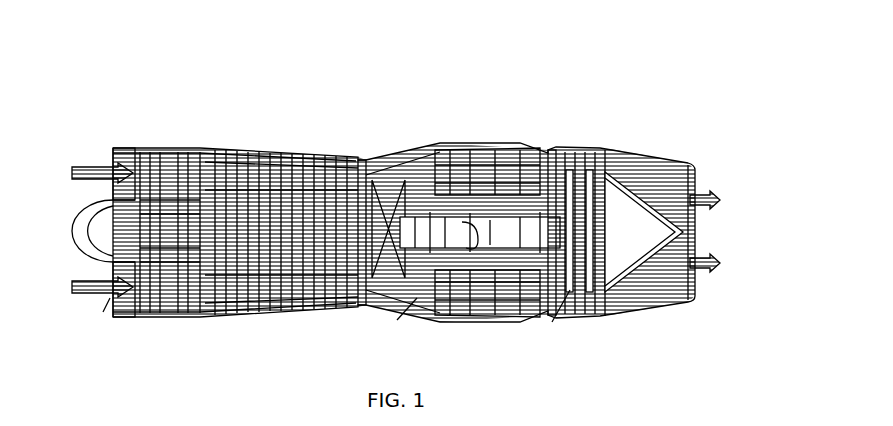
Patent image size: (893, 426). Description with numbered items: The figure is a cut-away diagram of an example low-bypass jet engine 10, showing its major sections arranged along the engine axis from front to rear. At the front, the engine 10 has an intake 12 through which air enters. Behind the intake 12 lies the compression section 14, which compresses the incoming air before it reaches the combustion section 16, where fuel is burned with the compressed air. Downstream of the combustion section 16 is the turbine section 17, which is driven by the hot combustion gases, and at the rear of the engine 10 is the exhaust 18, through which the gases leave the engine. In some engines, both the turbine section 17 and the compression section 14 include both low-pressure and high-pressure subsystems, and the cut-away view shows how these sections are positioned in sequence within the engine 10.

The low-bypass jet engine 10 is at (349, 44).
The intake 12 is at (104, 141).
The compression section 14 is at (270, 112).
The combustion section 16 is at (483, 112).
The turbine section 17 is at (588, 105).
The exhaust 18 is at (704, 182).